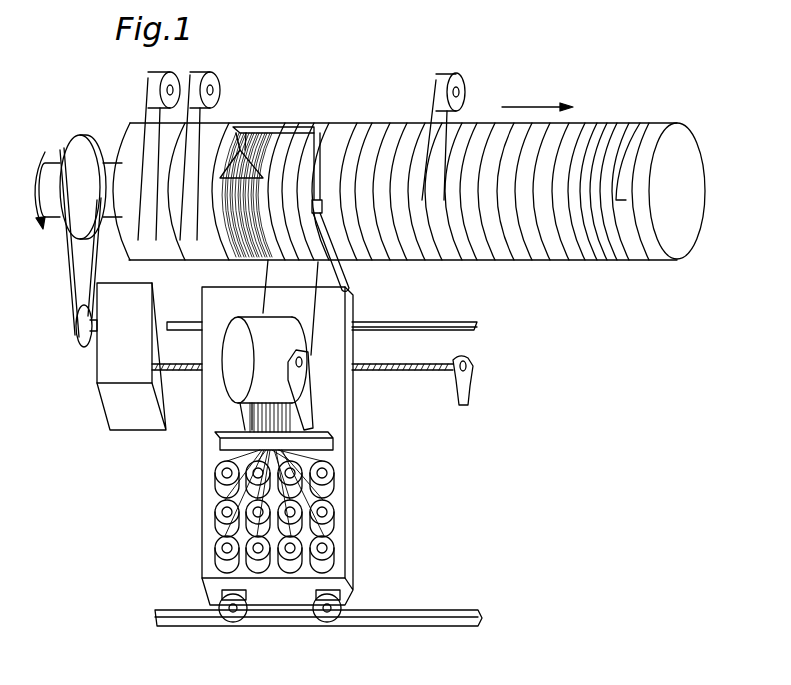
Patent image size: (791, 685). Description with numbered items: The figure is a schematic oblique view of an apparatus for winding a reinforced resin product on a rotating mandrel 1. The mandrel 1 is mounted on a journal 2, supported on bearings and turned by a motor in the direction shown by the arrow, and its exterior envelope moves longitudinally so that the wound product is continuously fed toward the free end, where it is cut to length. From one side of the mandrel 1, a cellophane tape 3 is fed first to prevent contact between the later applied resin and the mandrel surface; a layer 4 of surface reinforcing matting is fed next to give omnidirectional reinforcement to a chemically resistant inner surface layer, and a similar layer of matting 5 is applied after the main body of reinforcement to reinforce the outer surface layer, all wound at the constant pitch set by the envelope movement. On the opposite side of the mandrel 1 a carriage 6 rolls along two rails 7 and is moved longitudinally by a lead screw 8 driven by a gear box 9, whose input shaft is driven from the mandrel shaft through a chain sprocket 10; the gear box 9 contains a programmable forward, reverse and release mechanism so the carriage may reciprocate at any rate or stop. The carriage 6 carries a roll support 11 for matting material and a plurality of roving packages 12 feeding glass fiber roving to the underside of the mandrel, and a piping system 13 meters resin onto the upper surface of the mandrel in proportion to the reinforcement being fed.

The mandrel 1 is at (658, 126).
The journal 2 is at (55, 170).
The cellophane tape 3 is at (163, 84).
The layer of surface reinforcing matting 4 is at (198, 94).
The layer of matting 5 is at (440, 88).
The carriage 6 is at (207, 459).
The rails 7 is at (432, 322).
The lead screw 8 is at (412, 371).
The gear box 9 is at (107, 400).
The chain sprocket 10 is at (85, 307).
The roll support 11 is at (306, 380).
The roving packages 12 is at (333, 517).
The piping system 13 is at (272, 128).